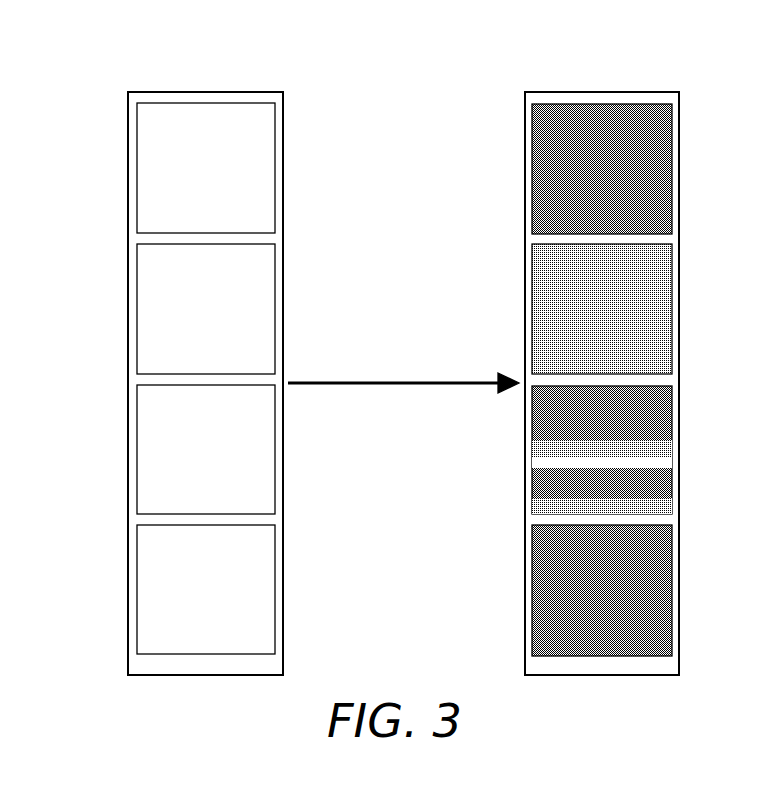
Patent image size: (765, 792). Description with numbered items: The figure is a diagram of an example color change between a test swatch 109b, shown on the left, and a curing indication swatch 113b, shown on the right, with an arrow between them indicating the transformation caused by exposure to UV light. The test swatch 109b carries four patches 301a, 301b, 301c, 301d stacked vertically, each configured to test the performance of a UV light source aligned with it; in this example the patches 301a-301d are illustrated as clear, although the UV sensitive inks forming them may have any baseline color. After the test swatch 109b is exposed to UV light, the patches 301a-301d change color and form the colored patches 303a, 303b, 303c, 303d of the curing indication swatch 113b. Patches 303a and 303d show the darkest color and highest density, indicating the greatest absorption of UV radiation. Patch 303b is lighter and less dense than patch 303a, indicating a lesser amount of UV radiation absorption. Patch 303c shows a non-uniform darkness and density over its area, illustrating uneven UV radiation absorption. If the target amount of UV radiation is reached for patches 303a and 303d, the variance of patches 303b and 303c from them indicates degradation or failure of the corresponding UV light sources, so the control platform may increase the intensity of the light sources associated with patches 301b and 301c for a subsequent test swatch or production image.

The test swatch 109b is at (205, 90).
The curing indication swatch 113b is at (601, 90).
The patch 301a is at (137, 165).
The patch 301b is at (137, 307).
The patch 301c is at (137, 448).
The patch 301d is at (137, 588).
The colored patch 303a is at (532, 165).
The colored patch 303b is at (532, 307).
The colored patch 303c is at (532, 449).
The colored patch 303d is at (532, 589).